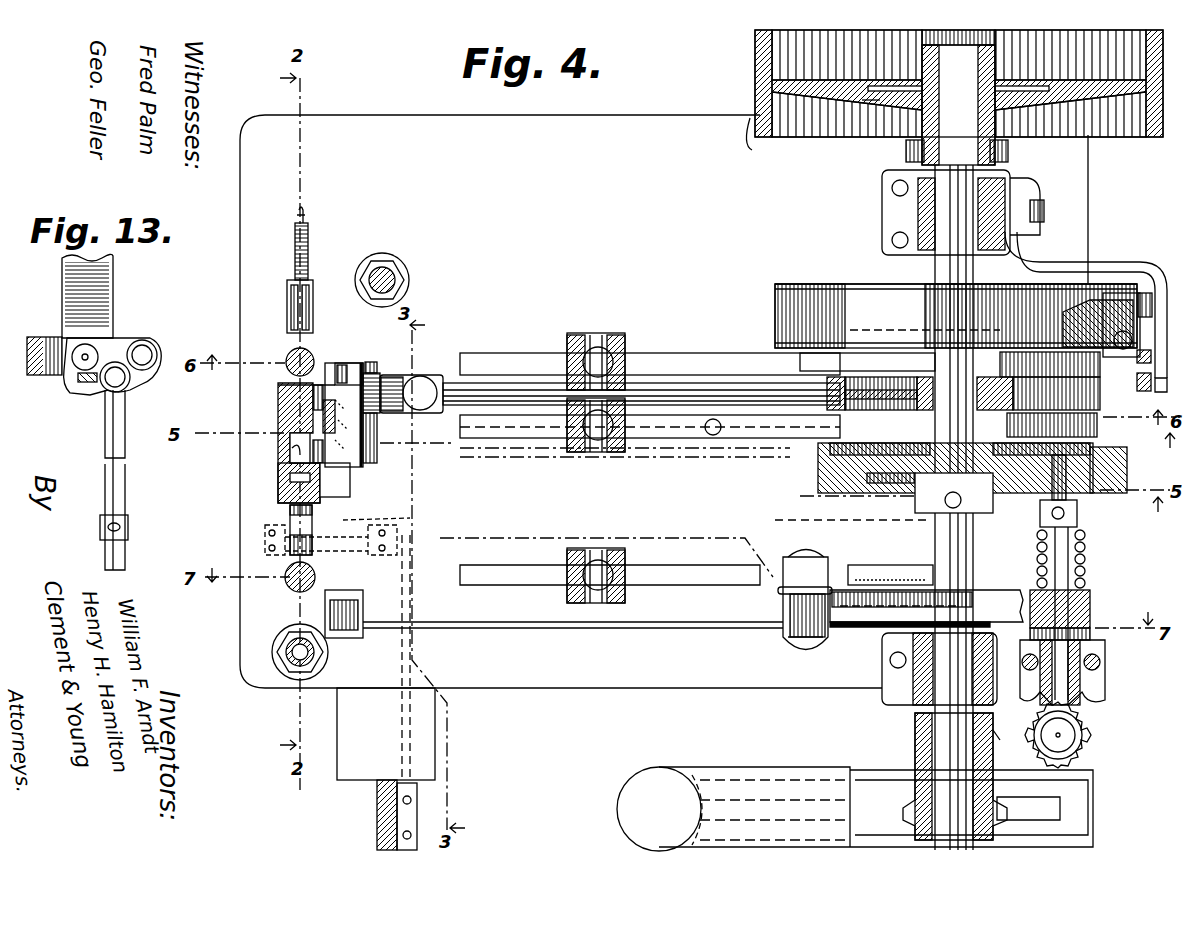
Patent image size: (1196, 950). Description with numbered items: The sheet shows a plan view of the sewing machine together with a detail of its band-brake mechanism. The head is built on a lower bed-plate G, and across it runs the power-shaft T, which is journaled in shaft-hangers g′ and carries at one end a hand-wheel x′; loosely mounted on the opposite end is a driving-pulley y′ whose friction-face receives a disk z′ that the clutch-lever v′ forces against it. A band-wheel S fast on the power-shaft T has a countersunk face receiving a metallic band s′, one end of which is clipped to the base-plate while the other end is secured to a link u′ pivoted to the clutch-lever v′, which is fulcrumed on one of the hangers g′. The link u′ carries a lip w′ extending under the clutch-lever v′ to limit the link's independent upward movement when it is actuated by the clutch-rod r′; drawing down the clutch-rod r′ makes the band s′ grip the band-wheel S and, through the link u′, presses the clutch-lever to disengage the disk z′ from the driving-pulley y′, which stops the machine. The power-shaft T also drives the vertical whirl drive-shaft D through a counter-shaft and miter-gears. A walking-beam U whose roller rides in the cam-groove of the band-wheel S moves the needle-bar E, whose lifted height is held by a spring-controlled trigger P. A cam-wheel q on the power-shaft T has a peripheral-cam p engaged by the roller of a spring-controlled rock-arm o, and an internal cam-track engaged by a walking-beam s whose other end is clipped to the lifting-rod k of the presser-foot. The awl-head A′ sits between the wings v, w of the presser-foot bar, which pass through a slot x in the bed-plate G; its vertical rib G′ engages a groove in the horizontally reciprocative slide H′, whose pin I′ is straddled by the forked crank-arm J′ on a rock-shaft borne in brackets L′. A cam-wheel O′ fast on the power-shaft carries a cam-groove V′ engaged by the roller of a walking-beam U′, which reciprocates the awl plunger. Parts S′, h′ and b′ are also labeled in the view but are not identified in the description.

In FIG. 13, the metallic band s′ is at (104, 285).
In FIG. 13, the link u′ is at (120, 352).
In FIG. 4, the link u′ is at (1127, 325).
In FIG. 13, the clutch-lever v′ is at (56, 372).
In FIG. 4, the clutch-lever v′ is at (1053, 262).
In FIG. 13, the lip w′ is at (86, 384).
In FIG. 13, the clutch-rod r′ is at (126, 497).
In FIG. 4, the lower bed-plate G is at (664, 401).
In FIG. 4, the disk z′ is at (862, 100).
In FIG. 4, the driving-pulley y′ is at (733, 137).
In FIG. 4, the power-shaft T is at (933, 528).
In FIG. 4, the shaft-hangers g′ is at (918, 212).
In FIG. 4, the gear wheel S′ is at (956, 316).
In FIG. 4, the band-wheel S is at (820, 290).
In FIG. 4, the cam-wheel O′ is at (818, 478).
In FIG. 4, the vertical driven shaft D is at (1005, 728).
In FIG. 4, the hand-wheel x′ is at (855, 809).
In FIG. 4, the peripheral-cam p is at (830, 628).
In FIG. 4, the rock-arm o is at (793, 642).
In FIG. 4, the cam-wheel q is at (926, 608).
In FIG. 4, the walking-beam s is at (890, 568).
In FIG. 4, the walking-beam U is at (503, 353).
In FIG. 4, the brackets L′ is at (440, 378).
In FIG. 4, the walking-beam U′ is at (512, 420).
In FIG. 4, the cam-groove V′ is at (625, 444).
In FIG. 4, the trigger P is at (287, 318).
In FIG. 4, the needle-bar E is at (286, 355).
In FIG. 4, the nut h′ is at (385, 270).
In FIG. 4, the awl-head A′ is at (278, 413).
In FIG. 4, the slot x is at (278, 388).
In FIG. 4, the wing v is at (275, 456).
In FIG. 4, the wing w is at (350, 488).
In FIG. 4, the vertical rib G′ is at (330, 412).
In FIG. 4, the slide H′ is at (417, 454).
In FIG. 4, the crank-arm J′ is at (370, 362).
In FIG. 4, the pin I′ is at (422, 376).
In FIG. 4, the lifting-rod k is at (292, 586).
In FIG. 4, the nut b′ is at (292, 645).